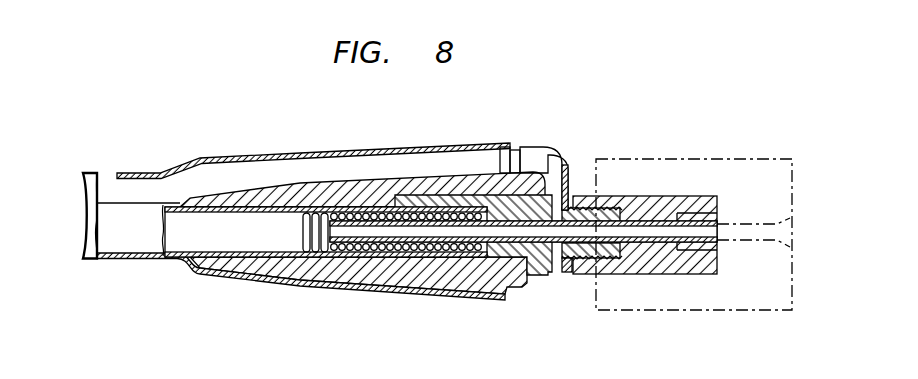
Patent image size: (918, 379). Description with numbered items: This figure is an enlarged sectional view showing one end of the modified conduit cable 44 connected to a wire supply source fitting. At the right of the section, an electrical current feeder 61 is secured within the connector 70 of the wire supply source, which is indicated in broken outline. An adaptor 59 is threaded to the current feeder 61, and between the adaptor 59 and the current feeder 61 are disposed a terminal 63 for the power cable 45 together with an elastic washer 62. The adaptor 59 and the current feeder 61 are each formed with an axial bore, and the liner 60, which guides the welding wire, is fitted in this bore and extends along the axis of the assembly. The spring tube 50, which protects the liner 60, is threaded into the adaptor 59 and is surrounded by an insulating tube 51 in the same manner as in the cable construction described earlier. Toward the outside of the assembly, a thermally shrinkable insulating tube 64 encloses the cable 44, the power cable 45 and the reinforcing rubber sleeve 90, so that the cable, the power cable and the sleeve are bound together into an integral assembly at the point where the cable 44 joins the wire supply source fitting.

The cable 44 is at (391, 297).
The power cable 45 is at (316, 158).
The spring tube 50 is at (303, 236).
The insulating tube 51 is at (131, 247).
The adaptor 59 is at (537, 287).
The liner 60 is at (716, 222).
The electrical current feeder 61 is at (640, 202).
The elastic washer 62 is at (567, 275).
The terminal 63 is at (537, 162).
The thermally shrinkable insulating tube 64 is at (262, 153).
The connector 70 is at (732, 311).
The reinforcing rubber sleeve 90 is at (332, 285).